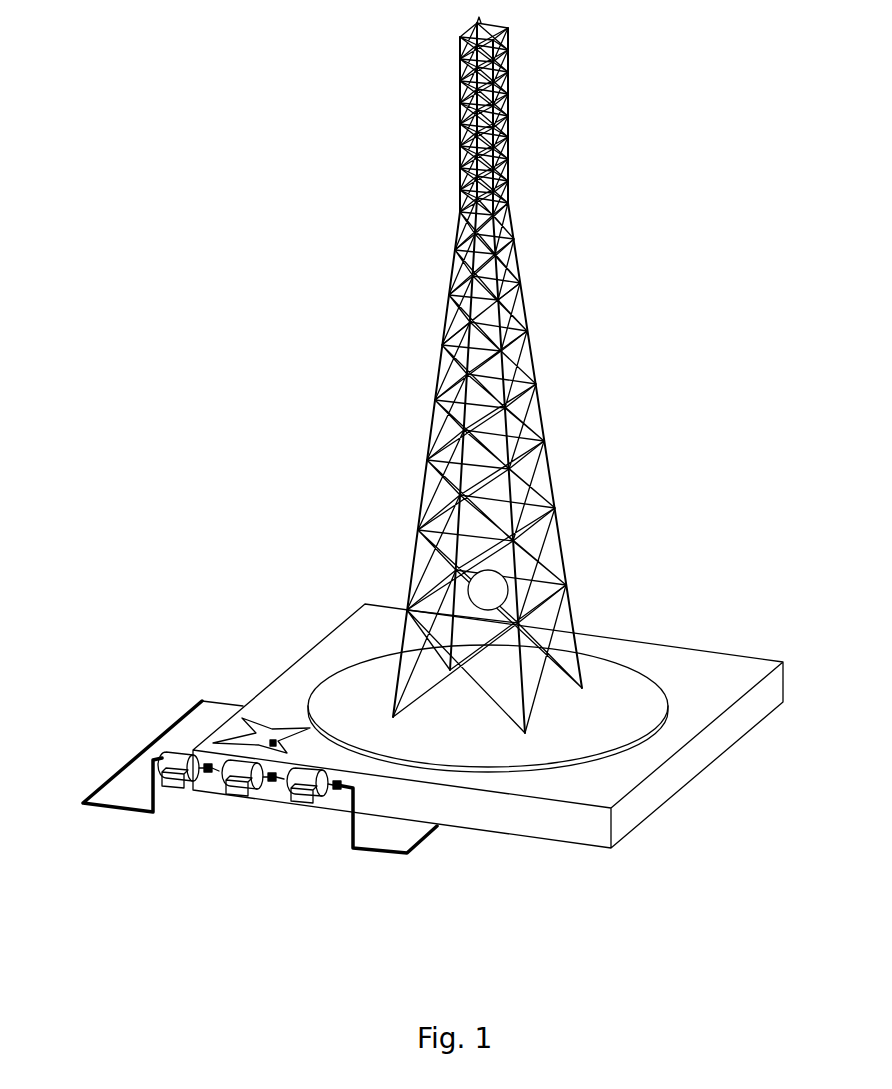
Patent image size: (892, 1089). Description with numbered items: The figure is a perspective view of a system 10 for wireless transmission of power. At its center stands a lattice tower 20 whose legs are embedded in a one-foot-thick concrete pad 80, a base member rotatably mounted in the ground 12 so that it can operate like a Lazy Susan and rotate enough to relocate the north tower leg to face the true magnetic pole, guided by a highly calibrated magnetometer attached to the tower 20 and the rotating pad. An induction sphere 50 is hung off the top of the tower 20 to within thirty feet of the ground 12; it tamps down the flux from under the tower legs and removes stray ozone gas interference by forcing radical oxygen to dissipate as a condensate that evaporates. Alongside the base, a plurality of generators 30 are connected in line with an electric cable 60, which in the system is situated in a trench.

The system for wireless transmission of power 10 is at (433, 465).
The ground 12 is at (742, 670).
The tower 20 is at (578, 240).
The generators 30 is at (196, 838).
The induction sphere 50 is at (488, 590).
The electric cable 60 is at (190, 732).
The concrete pad 80 is at (622, 682).